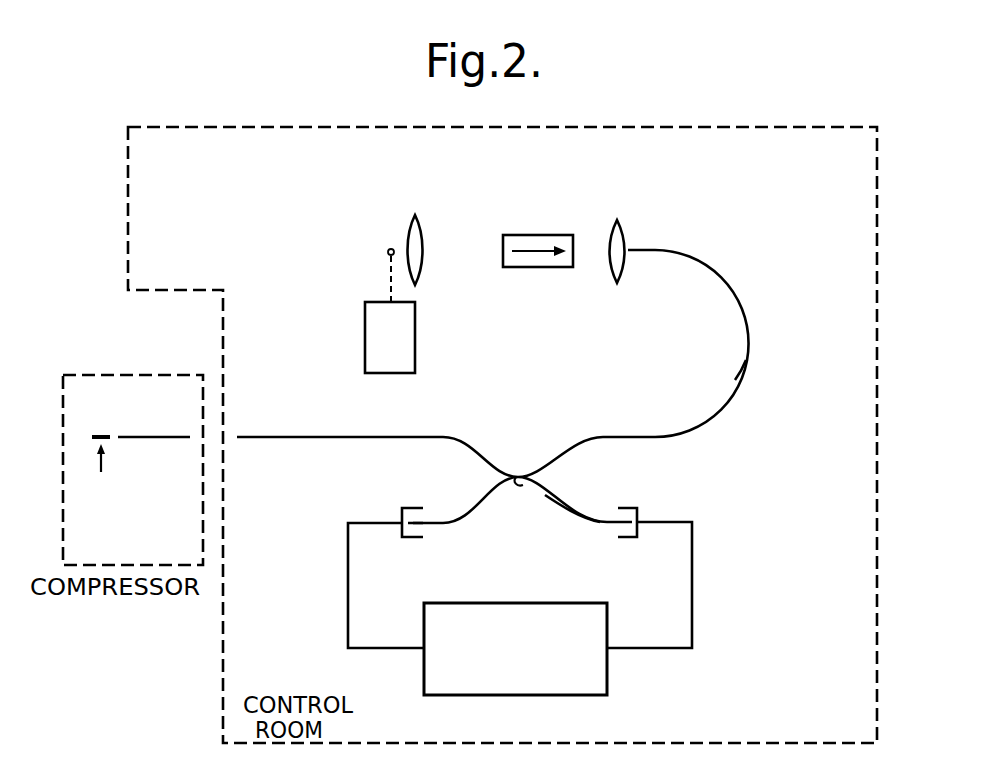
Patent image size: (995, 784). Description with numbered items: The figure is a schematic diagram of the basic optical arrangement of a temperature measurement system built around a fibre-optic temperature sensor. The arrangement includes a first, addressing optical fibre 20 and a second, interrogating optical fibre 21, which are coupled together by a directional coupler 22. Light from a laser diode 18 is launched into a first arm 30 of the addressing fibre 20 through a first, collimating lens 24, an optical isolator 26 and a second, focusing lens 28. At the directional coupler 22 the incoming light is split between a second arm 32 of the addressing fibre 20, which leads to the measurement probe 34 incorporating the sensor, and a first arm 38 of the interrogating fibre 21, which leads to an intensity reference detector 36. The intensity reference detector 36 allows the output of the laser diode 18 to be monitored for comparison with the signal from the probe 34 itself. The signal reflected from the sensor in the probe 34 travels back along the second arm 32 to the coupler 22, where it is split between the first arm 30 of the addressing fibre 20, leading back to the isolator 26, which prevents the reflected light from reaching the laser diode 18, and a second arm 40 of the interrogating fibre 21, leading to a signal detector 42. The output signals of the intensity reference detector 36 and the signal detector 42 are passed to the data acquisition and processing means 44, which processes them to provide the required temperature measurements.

The laser diode 18 is at (388, 254).
The addressing optical fibre 20 is at (728, 307).
The interrogating optical fibre 21 is at (566, 495).
The directional coupler 22 is at (520, 475).
The collimating lens 24 is at (415, 215).
The optical isolator 26 is at (528, 235).
The focusing lens 28 is at (619, 220).
The first arm of the addressing fibre 30 is at (745, 370).
The second arm of the addressing fibre 32 is at (315, 437).
The measurement probe 34 is at (101, 438).
The intensity reference detector 36 is at (407, 508).
The first arm of the interrogating fibre 38 is at (445, 524).
The second arm of the interrogating fibre 40 is at (572, 510).
The signal detector 42 is at (636, 540).
The data acquisition and processing means 44 is at (607, 680).